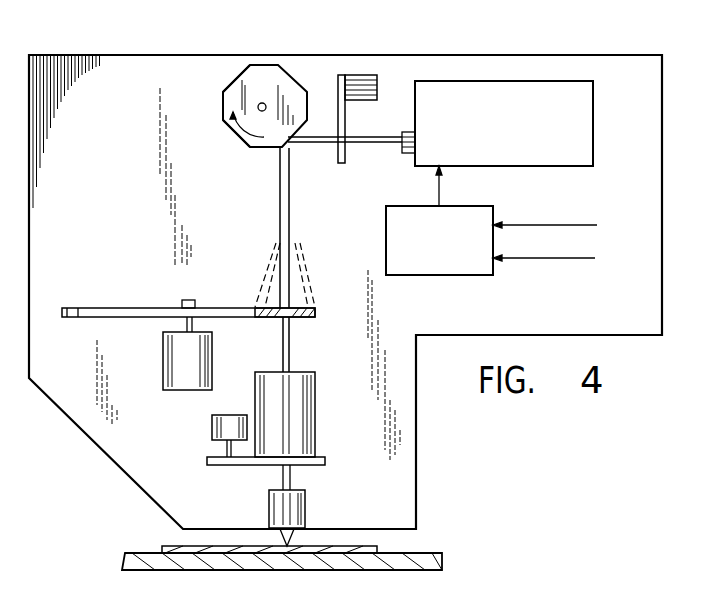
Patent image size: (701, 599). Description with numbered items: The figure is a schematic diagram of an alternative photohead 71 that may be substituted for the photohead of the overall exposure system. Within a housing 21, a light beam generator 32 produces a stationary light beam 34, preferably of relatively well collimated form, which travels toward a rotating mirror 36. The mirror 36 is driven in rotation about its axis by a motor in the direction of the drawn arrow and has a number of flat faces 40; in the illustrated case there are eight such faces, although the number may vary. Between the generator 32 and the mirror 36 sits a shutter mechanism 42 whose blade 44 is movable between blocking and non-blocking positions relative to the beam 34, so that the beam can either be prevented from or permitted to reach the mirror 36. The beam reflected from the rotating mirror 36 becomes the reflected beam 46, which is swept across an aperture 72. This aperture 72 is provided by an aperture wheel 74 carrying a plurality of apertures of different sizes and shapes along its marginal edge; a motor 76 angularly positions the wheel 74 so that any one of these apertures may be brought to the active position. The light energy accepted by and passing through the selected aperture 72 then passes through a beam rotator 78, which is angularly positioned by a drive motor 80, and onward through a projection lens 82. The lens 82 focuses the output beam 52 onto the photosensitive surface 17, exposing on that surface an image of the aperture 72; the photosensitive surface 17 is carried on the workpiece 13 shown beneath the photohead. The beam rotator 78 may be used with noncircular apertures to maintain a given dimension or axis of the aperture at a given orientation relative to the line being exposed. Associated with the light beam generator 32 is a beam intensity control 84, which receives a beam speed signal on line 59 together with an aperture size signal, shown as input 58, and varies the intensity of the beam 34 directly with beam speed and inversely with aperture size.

The workpiece web 13 is at (430, 553).
The photosensitive surface 17 is at (372, 547).
The housing 21 is at (605, 54).
The light beam generator 32 is at (593, 120).
The stationary light beam 34 is at (362, 143).
The rotating mirror 36 is at (279, 85).
The flat faces 40 is at (260, 64).
The shutter mechanism 42 is at (365, 75).
The shutter blade 44 is at (338, 112).
The reflected beam 46 is at (289, 208).
The output beam 52 is at (292, 540).
The beam speed input 58 is at (585, 226).
The beam speed signal line 59 is at (583, 258).
The photohead 71 is at (527, 54).
The aperture 72 is at (292, 318).
The aperture wheel 74 is at (133, 308).
The aperture wheel motor 76 is at (163, 372).
The beam rotator 78 is at (316, 418).
The drive motor 80 is at (212, 418).
The projection lens 82 is at (305, 506).
The beam intensity control 84 is at (472, 206).